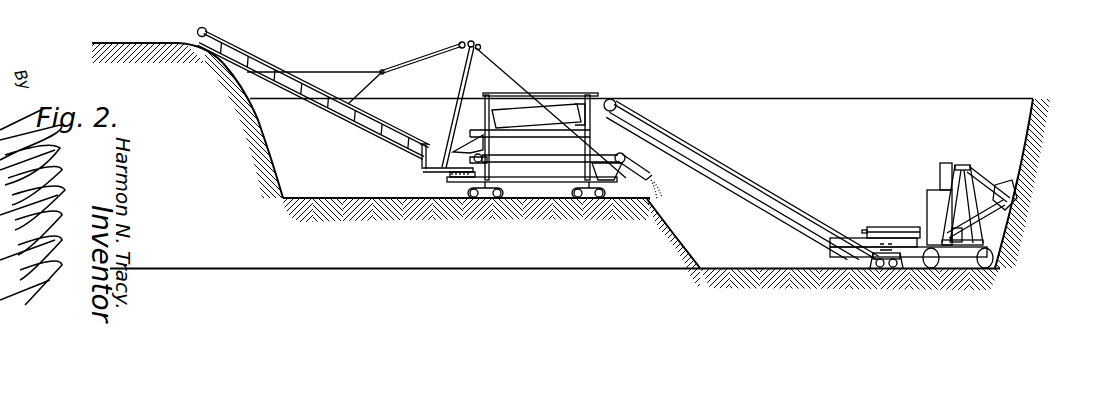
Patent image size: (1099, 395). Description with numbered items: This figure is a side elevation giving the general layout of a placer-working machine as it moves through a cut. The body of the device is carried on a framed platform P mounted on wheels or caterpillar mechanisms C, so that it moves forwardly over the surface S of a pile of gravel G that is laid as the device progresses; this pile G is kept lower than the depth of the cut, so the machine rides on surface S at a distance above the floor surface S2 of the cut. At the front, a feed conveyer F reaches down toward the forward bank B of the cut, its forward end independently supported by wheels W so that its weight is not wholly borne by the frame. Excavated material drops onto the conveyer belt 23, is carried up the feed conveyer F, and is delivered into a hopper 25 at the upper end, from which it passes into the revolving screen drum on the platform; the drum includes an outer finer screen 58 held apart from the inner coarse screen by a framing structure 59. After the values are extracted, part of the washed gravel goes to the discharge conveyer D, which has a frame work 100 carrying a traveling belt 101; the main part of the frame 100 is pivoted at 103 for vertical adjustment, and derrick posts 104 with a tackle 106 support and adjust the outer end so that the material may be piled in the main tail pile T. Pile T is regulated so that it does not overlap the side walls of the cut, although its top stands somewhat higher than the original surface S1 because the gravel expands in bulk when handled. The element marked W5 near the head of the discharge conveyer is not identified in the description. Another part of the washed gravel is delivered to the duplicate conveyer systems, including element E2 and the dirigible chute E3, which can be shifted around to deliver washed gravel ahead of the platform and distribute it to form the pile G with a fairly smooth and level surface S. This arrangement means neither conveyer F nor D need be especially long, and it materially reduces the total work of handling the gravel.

The main tail pile T is at (133, 62).
The head pulley of excavating conveyor W5 is at (243, 18).
The traveling belt 101 is at (315, 92).
The frame work 100 is at (314, 95).
The discharge conveyer D is at (317, 79).
The tackle 106 is at (402, 67).
The derrick posts 104 is at (458, 86).
The pivot 103 is at (422, 154).
The framing structure 59 is at (460, 148).
The outer finer screen 58 is at (527, 116).
The conveyer system E2 is at (550, 146).
The dirigible chute E3 is at (638, 176).
The hopper 25 is at (610, 100).
The conveyer belt 23 is at (707, 161).
The feed conveyer F is at (741, 164).
The original surface S1 is at (708, 97).
The surface S is at (417, 199).
The floor surface S2 is at (767, 270).
The pile of gravel G is at (331, 222).
The forward bank B is at (1038, 139).
The wheels or caterpillar mechanisms C is at (480, 202).
The framed platform P is at (530, 183).
The wheels W is at (907, 271).